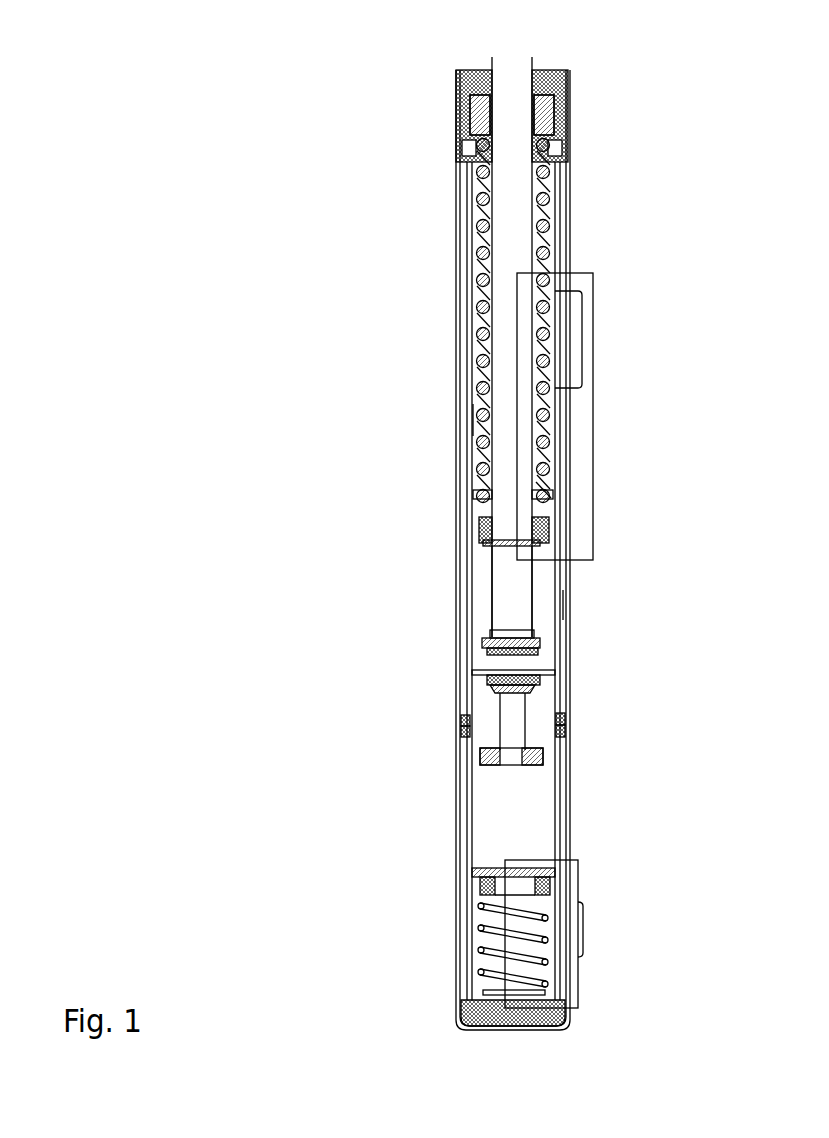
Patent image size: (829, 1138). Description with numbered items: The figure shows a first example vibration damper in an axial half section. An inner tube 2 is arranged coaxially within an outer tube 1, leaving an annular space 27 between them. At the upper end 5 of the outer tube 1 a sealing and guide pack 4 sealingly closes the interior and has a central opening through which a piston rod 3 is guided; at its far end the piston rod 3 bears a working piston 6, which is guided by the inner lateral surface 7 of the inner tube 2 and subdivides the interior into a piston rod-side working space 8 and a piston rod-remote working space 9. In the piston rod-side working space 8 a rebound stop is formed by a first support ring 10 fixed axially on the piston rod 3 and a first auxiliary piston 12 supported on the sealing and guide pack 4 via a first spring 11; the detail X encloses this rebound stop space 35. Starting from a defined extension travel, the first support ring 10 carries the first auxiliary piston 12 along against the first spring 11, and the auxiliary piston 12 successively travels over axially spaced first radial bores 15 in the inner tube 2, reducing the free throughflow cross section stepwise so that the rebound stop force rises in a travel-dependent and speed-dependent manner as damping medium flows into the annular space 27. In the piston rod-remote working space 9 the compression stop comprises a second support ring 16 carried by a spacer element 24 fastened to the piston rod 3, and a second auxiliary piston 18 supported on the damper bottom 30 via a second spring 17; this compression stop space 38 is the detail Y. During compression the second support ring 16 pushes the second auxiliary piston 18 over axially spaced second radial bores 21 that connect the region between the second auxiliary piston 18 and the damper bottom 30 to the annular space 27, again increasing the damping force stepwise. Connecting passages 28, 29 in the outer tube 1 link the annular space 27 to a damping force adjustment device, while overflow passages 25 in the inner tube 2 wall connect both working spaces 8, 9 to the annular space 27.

The outer tube 1 is at (456, 197).
The inner tube 2 is at (472, 243).
The piston rod 3 is at (508, 153).
The sealing and guide pack 4 is at (548, 110).
The upper end 5 is at (580, 59).
The working piston 6 is at (540, 658).
The inner lateral surface 7 is at (486, 318).
The piston rod-side working space 8 is at (483, 590).
The piston rod-remote working space 9 is at (495, 813).
The first support ring 10 is at (483, 522).
The first spring 11 is at (483, 420).
The first auxiliary piston 12 is at (545, 490).
The first radial bores 15 is at (582, 339).
The second support ring 16 is at (537, 757).
The second spring 17 is at (483, 950).
The second auxiliary piston 18 is at (550, 880).
The second radial bores 21 is at (583, 930).
The spacer element 24 is at (508, 708).
The overflow passages 25 is at (552, 890).
The annular space 27 is at (563, 605).
The connecting passage 28 is at (567, 703).
The connecting passage 29 is at (563, 745).
The damper bottom 30 is at (530, 1027).
The annular space; rebound stop space 35 is at (483, 363).
The compression stop space 38 is at (493, 917).
The detail X is at (595, 298).
The detail Y is at (580, 985).